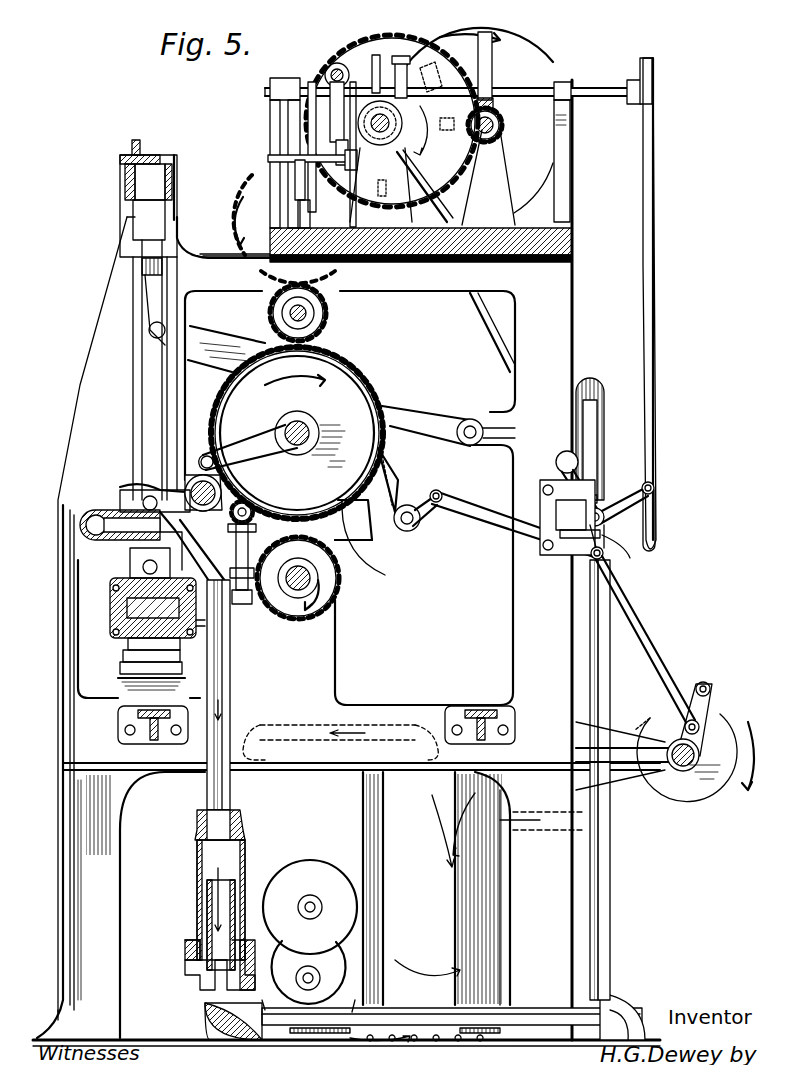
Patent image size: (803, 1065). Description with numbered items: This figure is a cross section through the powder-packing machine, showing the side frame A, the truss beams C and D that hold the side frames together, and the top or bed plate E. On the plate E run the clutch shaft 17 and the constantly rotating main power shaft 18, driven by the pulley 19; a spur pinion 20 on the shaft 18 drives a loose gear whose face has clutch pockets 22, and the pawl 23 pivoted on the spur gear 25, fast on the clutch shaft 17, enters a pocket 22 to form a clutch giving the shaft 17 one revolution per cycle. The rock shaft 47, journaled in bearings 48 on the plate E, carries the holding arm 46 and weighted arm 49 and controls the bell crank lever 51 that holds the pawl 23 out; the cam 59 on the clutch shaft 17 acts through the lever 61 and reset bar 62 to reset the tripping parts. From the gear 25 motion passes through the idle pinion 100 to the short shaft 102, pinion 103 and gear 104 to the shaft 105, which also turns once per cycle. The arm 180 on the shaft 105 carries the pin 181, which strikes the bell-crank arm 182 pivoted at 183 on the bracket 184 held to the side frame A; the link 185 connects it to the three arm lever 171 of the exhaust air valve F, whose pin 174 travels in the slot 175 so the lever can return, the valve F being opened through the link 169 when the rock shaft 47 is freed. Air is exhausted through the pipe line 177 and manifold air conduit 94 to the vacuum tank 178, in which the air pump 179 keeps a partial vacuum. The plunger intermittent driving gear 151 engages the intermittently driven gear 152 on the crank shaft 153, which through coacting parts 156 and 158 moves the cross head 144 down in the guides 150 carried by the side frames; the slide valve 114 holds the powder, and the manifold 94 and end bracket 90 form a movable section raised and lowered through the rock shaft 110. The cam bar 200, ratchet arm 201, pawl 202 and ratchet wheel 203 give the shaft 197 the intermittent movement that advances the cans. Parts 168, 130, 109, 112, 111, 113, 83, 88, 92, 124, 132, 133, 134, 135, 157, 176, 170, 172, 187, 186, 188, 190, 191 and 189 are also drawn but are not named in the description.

The side frame A is at (112, 316).
The top or bed plate E is at (573, 244).
The idle pinion 100 is at (262, 258).
The rock shaft 47 is at (528, 92).
The bracket 168 is at (640, 70).
The link 169 is at (655, 328).
The pulley 19 is at (542, 72).
The bell crank lever 51 is at (478, 78).
The weighted arm 49 is at (408, 64).
The pawl 23 is at (372, 68).
The spur gear 25 is at (395, 42).
The cam 59 is at (373, 150).
The clutch shaft 17 is at (405, 161).
The main power shaft 18 is at (485, 135).
The spur pinion 20 is at (496, 108).
The clutch pockets 22 is at (488, 177).
The bearings 48 is at (270, 118).
The holding arm 46 is at (308, 132).
The lever 61 is at (268, 170).
The reset bar 62 is at (295, 190).
The cross head 144 is at (120, 172).
The coacting part 158 is at (140, 268).
The guides 150 is at (137, 355).
The short shaft 102 is at (282, 308).
The pinion 103 is at (284, 318).
The coacting part 156 is at (225, 357).
The gear 104 is at (355, 378).
The shaft 105 is at (308, 428).
The arm 180 is at (305, 461).
The gear rim 130 is at (295, 516).
The pin 181 is at (248, 447).
The rock shaft 110 is at (216, 490).
The bracket 109 is at (130, 486).
The lever 112 is at (140, 500).
The manifold air conduit 94 is at (100, 512).
The arm 111 is at (150, 538).
The pin 113 is at (143, 568).
The block 83 is at (110, 595).
The slide valve 114 is at (127, 612).
The plate 88 is at (110, 634).
The plate 92 is at (128, 645).
The end bracket 90 is at (125, 674).
The bracket 124 is at (180, 676).
The truss beam D is at (120, 722).
The truss beam C is at (478, 708).
The gear 132 is at (298, 578).
The crank shaft 153 is at (300, 592).
The intermittently driven gear 152 is at (345, 590).
The pinion 133 is at (236, 520).
The spindle 134 is at (246, 598).
The collar 135 is at (250, 608).
The lever 157 is at (470, 419).
The bell-crank arm 182 is at (405, 478).
The pivot 183 is at (420, 520).
The link 185 is at (478, 510).
The bracket 184 is at (388, 525).
The plunger intermittent driving gear 151 is at (382, 541).
The pipe line 177 is at (596, 452).
The knob 176 is at (556, 460).
The link 170 is at (620, 500).
The pin 174 is at (655, 489).
The slot 175 is at (657, 520).
The exhaust air valve F is at (630, 558).
The three arm lever 171 is at (590, 540).
The pivot 172 is at (590, 558).
The cam bar 200 is at (660, 660).
The pawl 202 is at (690, 690).
The ratchet arm 201 is at (703, 722).
The shaft 197 is at (690, 762).
The ratchet wheel 203 is at (705, 800).
The coupling 187 is at (197, 840).
The cylinder 186 is at (196, 900).
The tube 188 is at (207, 900).
The piston 190 is at (207, 922).
The gland 191 is at (192, 958).
The air pump 179 is at (310, 866).
The roller 189 is at (262, 960).
The vacuum tank 178 is at (414, 825).